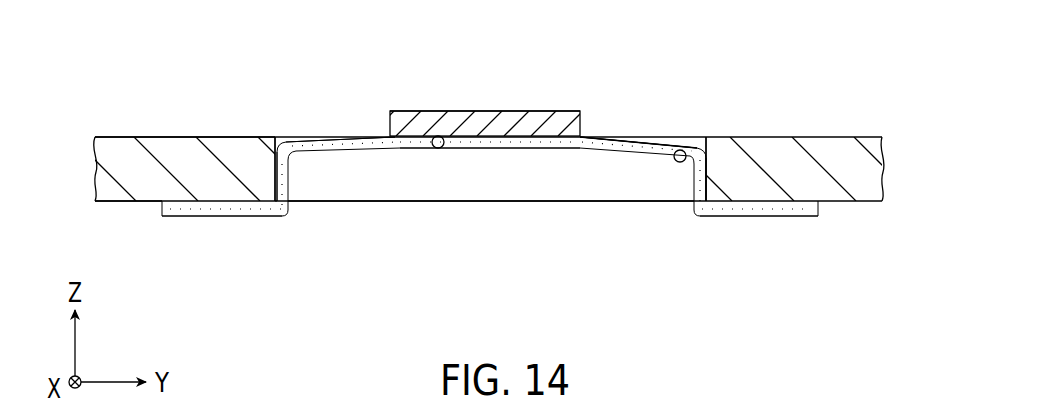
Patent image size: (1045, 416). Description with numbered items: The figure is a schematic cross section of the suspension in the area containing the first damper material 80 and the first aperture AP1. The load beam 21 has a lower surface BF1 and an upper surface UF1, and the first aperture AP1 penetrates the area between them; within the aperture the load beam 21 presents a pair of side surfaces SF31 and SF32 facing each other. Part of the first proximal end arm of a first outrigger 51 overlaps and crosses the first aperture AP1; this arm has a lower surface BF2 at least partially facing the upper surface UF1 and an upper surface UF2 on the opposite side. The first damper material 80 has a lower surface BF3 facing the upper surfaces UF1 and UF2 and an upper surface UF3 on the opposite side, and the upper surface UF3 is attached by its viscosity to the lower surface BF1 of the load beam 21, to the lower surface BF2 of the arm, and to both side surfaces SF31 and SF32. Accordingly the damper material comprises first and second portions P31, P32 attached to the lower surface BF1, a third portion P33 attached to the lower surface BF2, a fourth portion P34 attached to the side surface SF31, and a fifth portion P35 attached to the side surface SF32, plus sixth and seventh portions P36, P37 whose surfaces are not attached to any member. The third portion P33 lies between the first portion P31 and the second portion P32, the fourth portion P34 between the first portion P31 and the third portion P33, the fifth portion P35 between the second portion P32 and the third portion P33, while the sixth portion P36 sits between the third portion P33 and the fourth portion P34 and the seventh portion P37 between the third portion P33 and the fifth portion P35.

The load beam 21 is at (838, 130).
The first outrigger 51 is at (478, 106).
The first damper material 80 is at (534, 160).
The first aperture AP1 is at (408, 206).
The upper surface of the load beam UF1 is at (124, 136).
The upper surface of the first outrigger UF2 is at (542, 111).
The upper surface of the first damper material UF3 is at (654, 140).
The lower surface of the load beam BF1 is at (127, 202).
The lower surface of the first outrigger BF2 is at (440, 136).
The lower surface of the first damper material BF3 is at (681, 150).
The side surface of the load beam SF31 is at (282, 186).
The side surface of the load beam SF32 is at (692, 197).
The first portion P31 is at (226, 217).
The second portion P32 is at (771, 217).
The third portion P33 is at (470, 149).
The fourth portion P34 is at (288, 183).
The fifth portion P35 is at (700, 178).
The sixth portion P36 is at (345, 137).
The seventh portion P37 is at (617, 135).